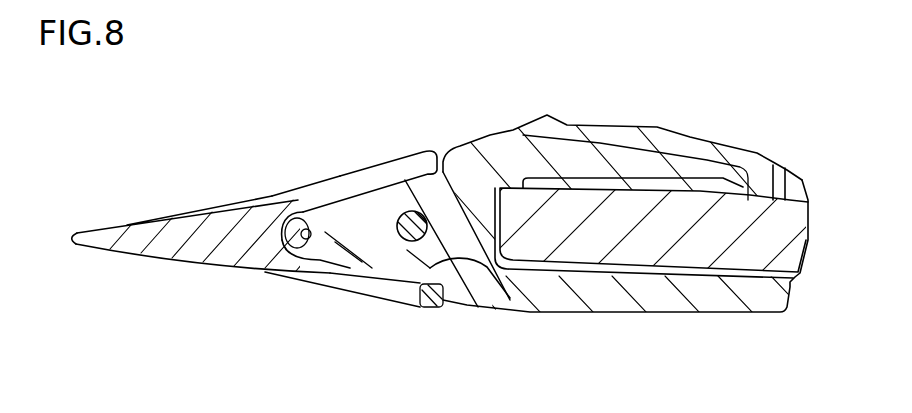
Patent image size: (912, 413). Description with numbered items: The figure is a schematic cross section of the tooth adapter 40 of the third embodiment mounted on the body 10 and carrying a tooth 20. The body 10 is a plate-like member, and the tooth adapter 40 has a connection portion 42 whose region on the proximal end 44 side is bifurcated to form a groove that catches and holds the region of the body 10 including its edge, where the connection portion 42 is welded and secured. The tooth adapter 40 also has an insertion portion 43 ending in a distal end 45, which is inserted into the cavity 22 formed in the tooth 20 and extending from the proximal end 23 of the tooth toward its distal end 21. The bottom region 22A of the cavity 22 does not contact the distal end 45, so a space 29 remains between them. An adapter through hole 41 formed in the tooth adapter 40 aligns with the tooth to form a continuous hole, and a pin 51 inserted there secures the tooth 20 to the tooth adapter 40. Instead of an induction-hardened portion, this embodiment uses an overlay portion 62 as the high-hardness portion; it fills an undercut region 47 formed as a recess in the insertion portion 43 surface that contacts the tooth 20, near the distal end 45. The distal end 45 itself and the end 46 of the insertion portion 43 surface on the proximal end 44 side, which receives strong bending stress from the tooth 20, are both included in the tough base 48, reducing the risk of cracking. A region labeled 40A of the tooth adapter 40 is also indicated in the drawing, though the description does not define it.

The body 10 is at (683, 255).
The tooth 20 is at (128, 231).
The distal end 21 is at (70, 243).
The cavity 22 is at (497, 282).
The bottom region 22A is at (322, 268).
The proximal end 23 is at (452, 304).
The space 29 is at (292, 205).
The tooth adapter 40 is at (552, 134).
The front end of pressing member 40A is at (336, 179).
The adapter through hole 41 is at (404, 243).
The connection portion 42 is at (622, 145).
The insertion portion 43 is at (393, 160).
The proximal end 44 is at (755, 195).
The distal end 45 is at (273, 258).
The end 46 is at (421, 296).
The undercut region 47 is at (312, 212).
The base 48 is at (346, 262).
The pin 51 is at (386, 262).
The overlay portion 62 is at (308, 210).